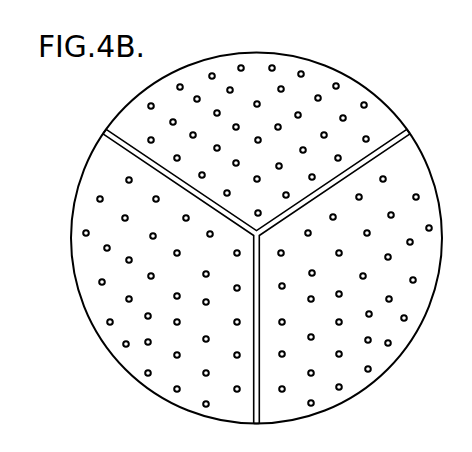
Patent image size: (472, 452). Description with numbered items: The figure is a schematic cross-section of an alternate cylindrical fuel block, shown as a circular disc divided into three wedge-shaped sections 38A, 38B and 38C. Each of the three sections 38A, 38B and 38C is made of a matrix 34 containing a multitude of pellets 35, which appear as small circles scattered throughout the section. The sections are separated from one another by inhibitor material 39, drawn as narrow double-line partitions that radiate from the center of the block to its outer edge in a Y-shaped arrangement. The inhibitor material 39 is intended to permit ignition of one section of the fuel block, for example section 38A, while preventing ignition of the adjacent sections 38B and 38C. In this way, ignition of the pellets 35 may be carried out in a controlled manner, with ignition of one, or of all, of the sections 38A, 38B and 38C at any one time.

The matrix 34 is at (195, 82).
The pellets 35 is at (346, 81).
The section 38A is at (300, 52).
The section 38B is at (74, 167).
The section 38C is at (408, 358).
The inhibitor material 39 is at (103, 133).